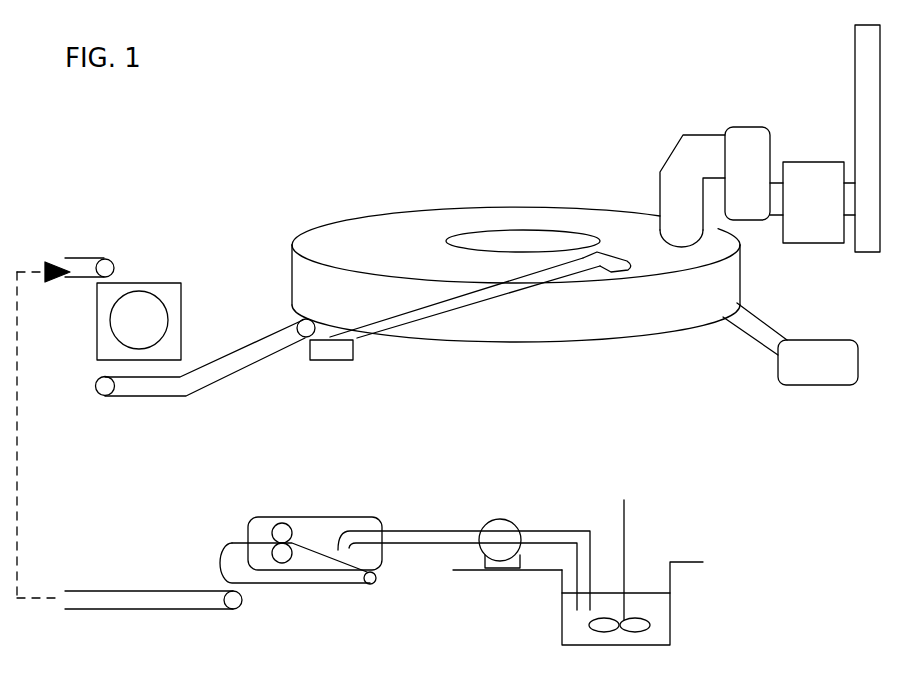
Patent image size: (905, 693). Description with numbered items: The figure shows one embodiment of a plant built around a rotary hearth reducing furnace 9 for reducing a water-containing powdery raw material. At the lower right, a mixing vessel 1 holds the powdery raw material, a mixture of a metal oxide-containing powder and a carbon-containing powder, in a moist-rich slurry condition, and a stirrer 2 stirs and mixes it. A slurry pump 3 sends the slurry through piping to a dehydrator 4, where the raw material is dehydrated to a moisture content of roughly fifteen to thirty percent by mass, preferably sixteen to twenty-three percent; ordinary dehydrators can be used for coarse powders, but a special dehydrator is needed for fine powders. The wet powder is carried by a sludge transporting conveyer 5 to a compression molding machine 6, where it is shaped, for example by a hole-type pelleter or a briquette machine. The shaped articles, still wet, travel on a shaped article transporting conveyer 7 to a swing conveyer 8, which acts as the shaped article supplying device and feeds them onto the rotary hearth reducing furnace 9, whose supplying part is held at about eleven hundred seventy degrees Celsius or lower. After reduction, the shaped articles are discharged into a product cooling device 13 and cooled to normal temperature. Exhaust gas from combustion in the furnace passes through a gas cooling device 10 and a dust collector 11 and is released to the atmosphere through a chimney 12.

The mixing vessel 1 is at (669, 607).
The stirrer 2 is at (622, 567).
The slurry pump 3 is at (495, 548).
The dehydrator 4 is at (304, 581).
The sludge transporting conveyer 5 is at (158, 598).
The compression molding machine 6 is at (150, 291).
The shaped article transporting conveyer 7 is at (238, 373).
The swing conveyer 8 is at (403, 323).
The rotary hearth reducing furnace 9 is at (495, 215).
The gas cooling device 10 is at (728, 127).
The dust collector 11 is at (807, 237).
The chimney 12 is at (858, 47).
The product cooling device 13 is at (790, 382).